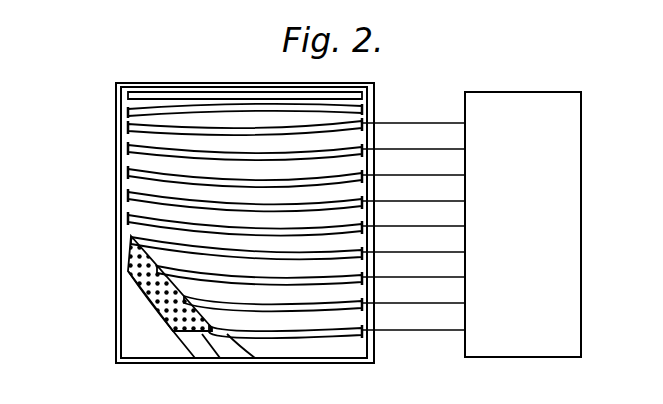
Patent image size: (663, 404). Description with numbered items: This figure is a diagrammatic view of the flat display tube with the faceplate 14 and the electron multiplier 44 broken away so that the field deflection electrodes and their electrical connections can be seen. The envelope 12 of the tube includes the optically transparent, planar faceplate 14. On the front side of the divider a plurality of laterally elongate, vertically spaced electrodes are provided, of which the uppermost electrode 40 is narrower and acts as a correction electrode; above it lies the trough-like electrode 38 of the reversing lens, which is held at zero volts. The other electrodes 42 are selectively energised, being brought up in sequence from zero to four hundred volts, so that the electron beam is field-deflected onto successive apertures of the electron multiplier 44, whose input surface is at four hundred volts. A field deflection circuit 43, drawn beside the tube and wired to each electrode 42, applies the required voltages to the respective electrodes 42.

The envelope 12 is at (372, 342).
The faceplate 14 is at (127, 329).
The trough-like electrode 38 is at (128, 97).
The uppermost electrode 40 is at (128, 115).
The electrodes 42 is at (128, 133).
The field deflection circuit 43 is at (539, 103).
The electron multiplier 44 is at (200, 331).